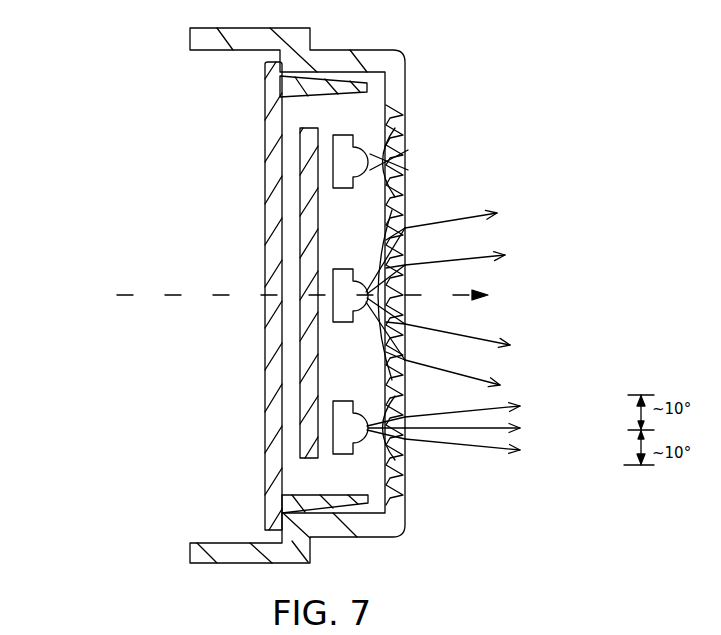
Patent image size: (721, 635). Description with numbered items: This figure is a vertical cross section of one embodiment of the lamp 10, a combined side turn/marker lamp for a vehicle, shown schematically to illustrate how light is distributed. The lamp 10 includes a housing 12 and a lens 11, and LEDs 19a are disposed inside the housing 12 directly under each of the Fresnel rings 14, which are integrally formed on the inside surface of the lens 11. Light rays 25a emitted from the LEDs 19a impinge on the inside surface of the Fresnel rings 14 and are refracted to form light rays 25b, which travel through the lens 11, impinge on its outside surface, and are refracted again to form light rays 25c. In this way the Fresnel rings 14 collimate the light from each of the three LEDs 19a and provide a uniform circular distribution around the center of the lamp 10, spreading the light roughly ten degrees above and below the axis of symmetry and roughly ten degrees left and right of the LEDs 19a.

The lamp 10 is at (133, 42).
The lens 11 is at (395, 527).
The housing 12 is at (263, 370).
The Fresnel rings 14 is at (392, 157).
The LEDs 19a is at (353, 160).
The light rays 25a is at (375, 272).
The light rays 25b is at (410, 214).
The light rays 25c is at (467, 219).